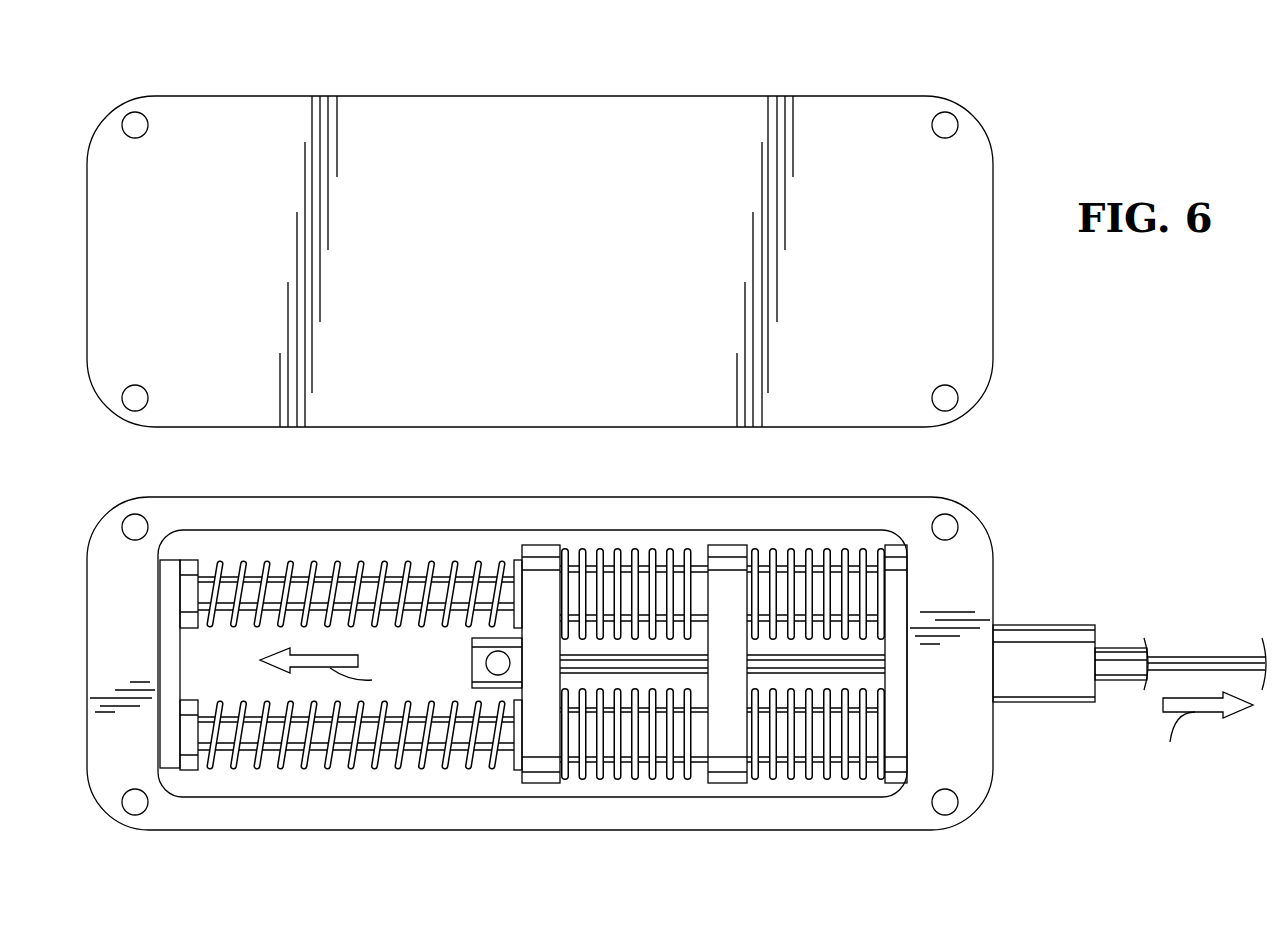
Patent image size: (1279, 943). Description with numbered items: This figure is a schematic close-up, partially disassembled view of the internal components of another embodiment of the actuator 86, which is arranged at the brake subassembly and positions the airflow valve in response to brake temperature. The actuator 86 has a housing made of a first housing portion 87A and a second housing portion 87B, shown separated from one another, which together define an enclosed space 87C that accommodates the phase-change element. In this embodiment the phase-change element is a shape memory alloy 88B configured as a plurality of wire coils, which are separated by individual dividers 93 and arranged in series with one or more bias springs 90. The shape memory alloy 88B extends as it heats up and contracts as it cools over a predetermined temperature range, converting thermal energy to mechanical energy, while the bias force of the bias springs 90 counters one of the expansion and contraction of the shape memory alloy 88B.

The actuator 86 is at (1018, 125).
The first housing portion 87A is at (872, 512).
The second housing portion 87B is at (535, 135).
The enclosed space 87C is at (572, 540).
The shape memory alloy 88B is at (688, 552).
The bias spring 90 is at (383, 560).
The divider 93 is at (540, 560).